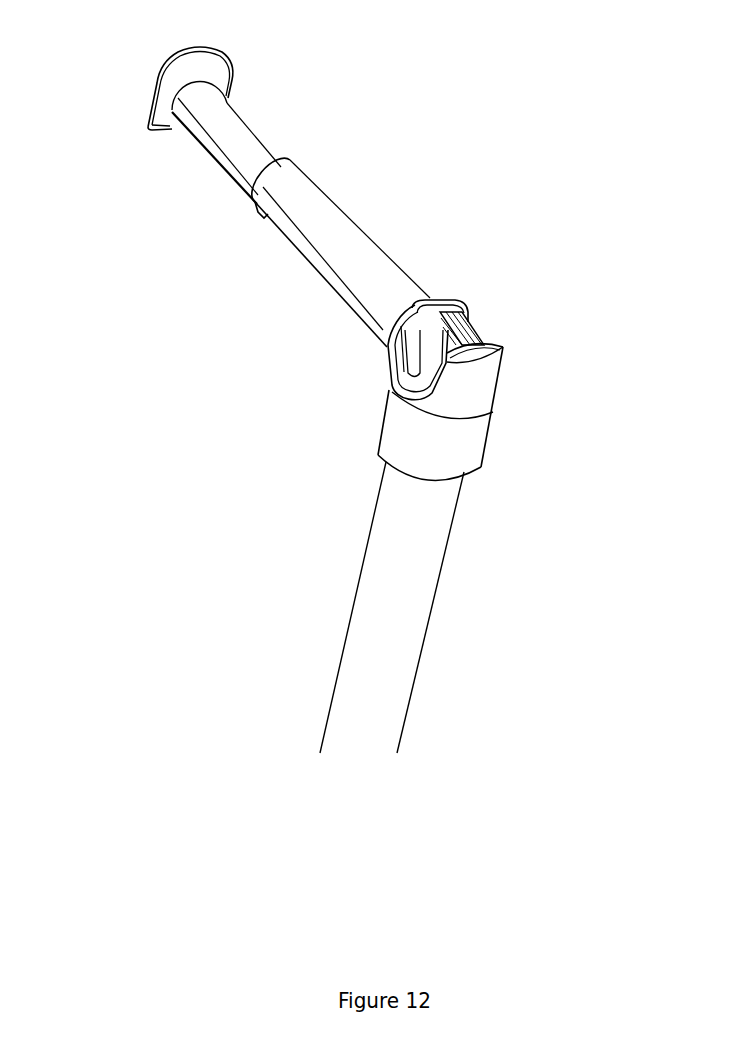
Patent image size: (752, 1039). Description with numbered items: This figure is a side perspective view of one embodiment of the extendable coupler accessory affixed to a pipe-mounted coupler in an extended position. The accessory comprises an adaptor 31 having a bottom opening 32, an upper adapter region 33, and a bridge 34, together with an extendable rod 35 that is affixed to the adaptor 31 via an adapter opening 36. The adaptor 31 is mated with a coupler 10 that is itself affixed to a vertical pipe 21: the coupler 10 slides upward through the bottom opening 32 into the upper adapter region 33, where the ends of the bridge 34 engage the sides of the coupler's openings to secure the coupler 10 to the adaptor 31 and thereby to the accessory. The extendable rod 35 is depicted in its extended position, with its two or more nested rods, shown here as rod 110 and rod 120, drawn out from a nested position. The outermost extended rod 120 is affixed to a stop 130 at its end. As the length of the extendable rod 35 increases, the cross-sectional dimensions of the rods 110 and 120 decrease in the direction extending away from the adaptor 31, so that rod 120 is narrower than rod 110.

The coupler 10 is at (430, 360).
The vertical pipe 21 is at (385, 588).
The adaptor 31 is at (397, 424).
The bottom opening 32 is at (392, 465).
The upper adapter region 33 is at (498, 373).
The bridge 34 is at (462, 325).
The extendable rod 35 is at (263, 218).
The adapter opening 36 is at (430, 302).
The rod 110 is at (298, 187).
The rod 120 is at (212, 100).
The stop 130 is at (159, 90).